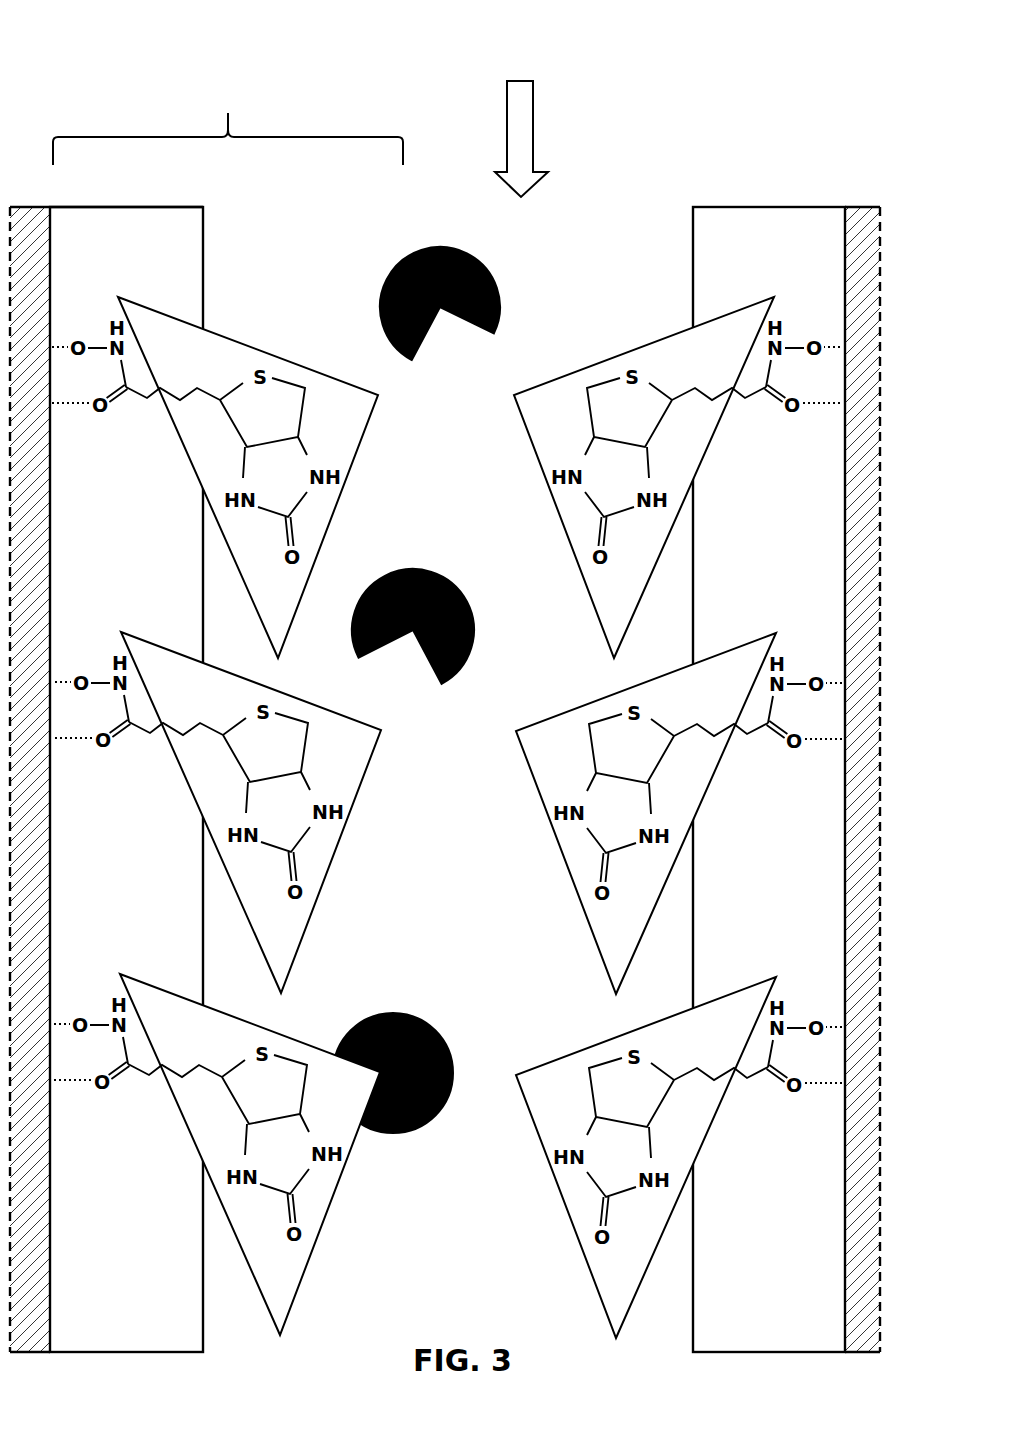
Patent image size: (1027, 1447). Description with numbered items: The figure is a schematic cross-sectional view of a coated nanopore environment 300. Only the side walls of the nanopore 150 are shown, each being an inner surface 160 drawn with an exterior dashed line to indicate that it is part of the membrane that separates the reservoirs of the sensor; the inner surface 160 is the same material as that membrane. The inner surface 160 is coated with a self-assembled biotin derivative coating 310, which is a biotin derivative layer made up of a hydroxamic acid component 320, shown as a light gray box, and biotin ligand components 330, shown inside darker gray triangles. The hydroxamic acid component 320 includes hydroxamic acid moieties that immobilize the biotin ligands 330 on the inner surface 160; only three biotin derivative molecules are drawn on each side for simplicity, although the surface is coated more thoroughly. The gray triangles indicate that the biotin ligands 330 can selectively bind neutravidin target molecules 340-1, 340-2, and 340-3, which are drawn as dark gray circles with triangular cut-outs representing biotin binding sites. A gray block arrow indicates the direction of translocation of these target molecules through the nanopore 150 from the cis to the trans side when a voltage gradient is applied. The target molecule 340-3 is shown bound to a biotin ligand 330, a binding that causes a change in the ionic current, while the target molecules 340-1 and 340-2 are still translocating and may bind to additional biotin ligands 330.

The coated nanopore environment 300 is at (445, 692).
The self-assembled biotin derivative coating 310 is at (228, 123).
The hydroxamic acid component 320 is at (138, 208).
The inner surface 160 is at (42, 207).
The nanopore 150 is at (629, 155).
The biotin ligand component 330 is at (266, 332).
The neutravidin target molecule 340-1 is at (427, 246).
The neutravidin target molecule 340-2 is at (427, 578).
The neutravidin target molecule 340-3 is at (390, 1013).